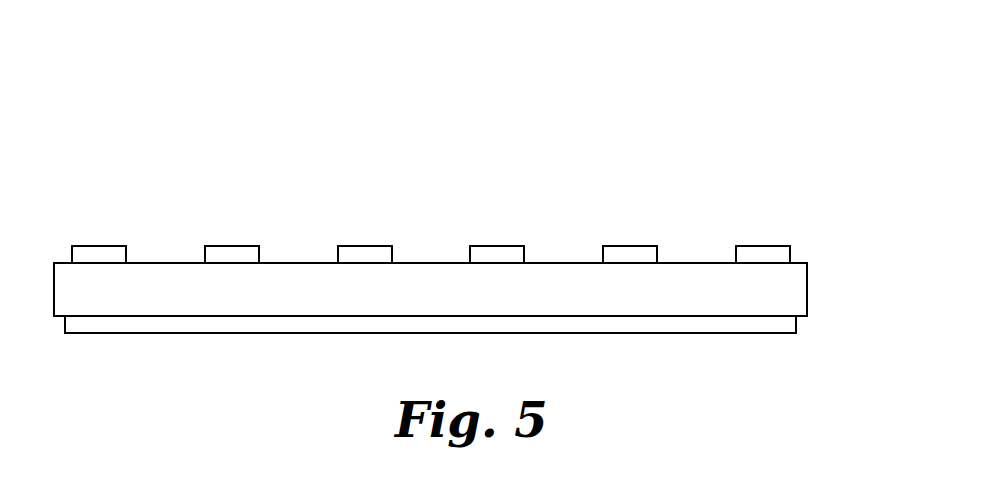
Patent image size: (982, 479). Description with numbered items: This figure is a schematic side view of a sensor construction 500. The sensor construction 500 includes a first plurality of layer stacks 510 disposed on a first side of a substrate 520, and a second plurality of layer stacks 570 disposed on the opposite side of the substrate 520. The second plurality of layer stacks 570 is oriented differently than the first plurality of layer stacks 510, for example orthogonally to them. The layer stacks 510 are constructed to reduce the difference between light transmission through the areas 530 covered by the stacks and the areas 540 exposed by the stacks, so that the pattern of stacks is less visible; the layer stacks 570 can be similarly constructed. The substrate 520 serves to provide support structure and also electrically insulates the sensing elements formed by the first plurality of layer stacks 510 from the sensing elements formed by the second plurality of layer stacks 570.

The sensor construction 500 is at (580, 122).
The first plurality of layer stacks 510 is at (772, 250).
The substrate 520 is at (798, 303).
The areas covered by the stacks 530 is at (260, 231).
The areas exposed by the stacks 540 is at (338, 231).
The second plurality of layer stacks 570 is at (630, 326).